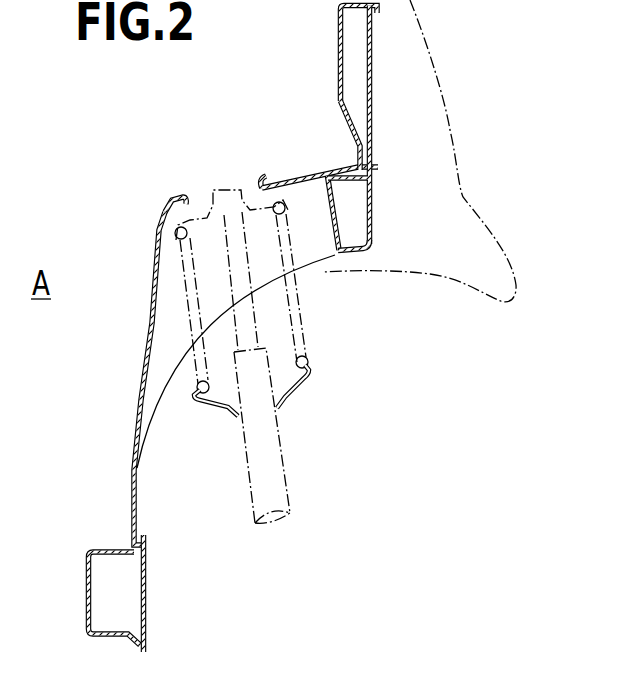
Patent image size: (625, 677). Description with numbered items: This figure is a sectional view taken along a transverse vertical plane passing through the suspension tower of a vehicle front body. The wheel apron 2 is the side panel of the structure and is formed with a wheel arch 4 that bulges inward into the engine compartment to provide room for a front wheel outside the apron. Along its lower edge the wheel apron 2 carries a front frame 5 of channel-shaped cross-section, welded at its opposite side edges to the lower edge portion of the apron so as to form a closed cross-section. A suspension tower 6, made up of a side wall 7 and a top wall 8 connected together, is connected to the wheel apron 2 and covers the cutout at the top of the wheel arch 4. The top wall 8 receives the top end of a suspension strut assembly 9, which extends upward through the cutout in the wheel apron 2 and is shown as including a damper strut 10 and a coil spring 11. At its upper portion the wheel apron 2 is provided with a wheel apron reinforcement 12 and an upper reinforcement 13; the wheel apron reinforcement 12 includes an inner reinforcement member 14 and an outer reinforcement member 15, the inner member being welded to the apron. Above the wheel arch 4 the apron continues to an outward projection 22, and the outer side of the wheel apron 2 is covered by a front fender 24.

The wheel apron 2 is at (319, 97).
The wheel arch 4 is at (153, 405).
The front frame 5 is at (85, 585).
The suspension tower 6 is at (130, 371).
The side wall 7 is at (150, 305).
The top wall 8 is at (163, 230).
The suspension strut assembly 9 is at (303, 380).
The damper strut 10 is at (290, 455).
The coil spring 11 is at (295, 292).
The wheel apron reinforcement 12 is at (397, 215).
The upper reinforcement 13 is at (372, 88).
The inner reinforcement member 14 is at (340, 203).
The outer reinforcement member 15 is at (368, 243).
The outward projection 22 is at (352, 136).
The front fender 24 is at (463, 175).